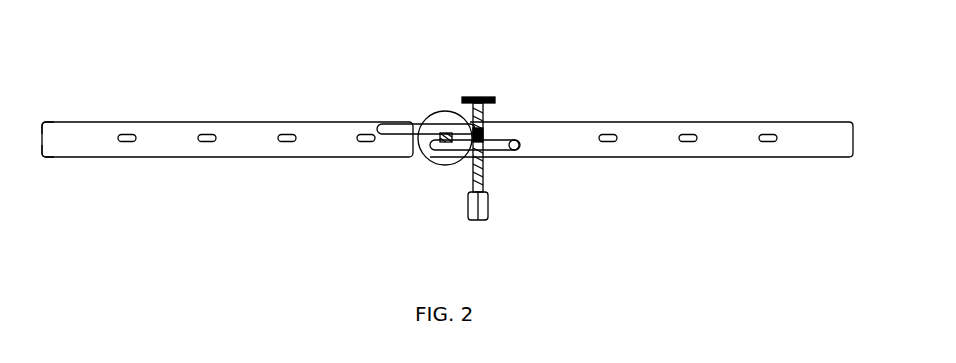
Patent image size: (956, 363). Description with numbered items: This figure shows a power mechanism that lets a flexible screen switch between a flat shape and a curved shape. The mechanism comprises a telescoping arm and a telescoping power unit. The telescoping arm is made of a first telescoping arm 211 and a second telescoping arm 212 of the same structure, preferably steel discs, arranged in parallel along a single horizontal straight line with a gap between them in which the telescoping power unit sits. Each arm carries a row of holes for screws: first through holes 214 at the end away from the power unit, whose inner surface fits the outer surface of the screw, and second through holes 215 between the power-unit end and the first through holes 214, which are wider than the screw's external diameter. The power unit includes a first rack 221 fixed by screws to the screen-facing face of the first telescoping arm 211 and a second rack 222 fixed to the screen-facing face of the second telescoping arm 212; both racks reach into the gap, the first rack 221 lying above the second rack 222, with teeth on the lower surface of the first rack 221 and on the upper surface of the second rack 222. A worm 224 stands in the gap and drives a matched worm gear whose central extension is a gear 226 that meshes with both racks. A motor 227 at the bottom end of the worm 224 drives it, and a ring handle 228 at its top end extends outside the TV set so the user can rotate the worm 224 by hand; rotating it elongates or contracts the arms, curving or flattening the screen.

The first telescoping arm 211 is at (165, 128).
The second telescoping arm 212 is at (730, 132).
The first through holes 214 is at (52, 122).
The second through holes 215 is at (608, 133).
The first rack 221 is at (400, 125).
The second rack 222 is at (517, 152).
The worm 224 is at (490, 205).
The gear 226 is at (440, 168).
The motor 227 is at (483, 222).
The ring handle 228 is at (488, 95).